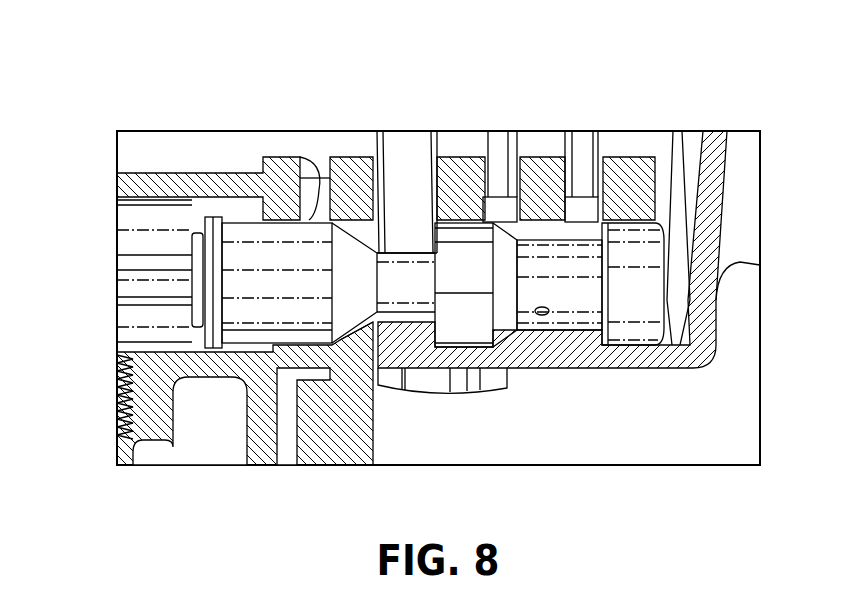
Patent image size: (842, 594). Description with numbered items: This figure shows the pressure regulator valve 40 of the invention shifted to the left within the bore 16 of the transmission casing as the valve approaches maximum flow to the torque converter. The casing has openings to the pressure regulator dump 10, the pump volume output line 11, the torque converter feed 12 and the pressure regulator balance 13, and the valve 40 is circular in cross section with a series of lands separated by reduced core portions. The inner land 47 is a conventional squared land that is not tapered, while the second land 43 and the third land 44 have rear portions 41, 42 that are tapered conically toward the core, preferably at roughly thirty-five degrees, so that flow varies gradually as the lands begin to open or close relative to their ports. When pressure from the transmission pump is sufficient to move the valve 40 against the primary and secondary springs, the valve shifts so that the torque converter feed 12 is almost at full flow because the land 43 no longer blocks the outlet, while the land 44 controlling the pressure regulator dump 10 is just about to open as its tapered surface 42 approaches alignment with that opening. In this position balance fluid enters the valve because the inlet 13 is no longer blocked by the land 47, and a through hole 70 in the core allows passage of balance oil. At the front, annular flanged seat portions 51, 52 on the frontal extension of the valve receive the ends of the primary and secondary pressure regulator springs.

The pressure regulator dump 10 is at (307, 155).
The pump volume output line 11 is at (410, 170).
The torque converter feed 12 is at (500, 170).
The pressure regulator balance 13 is at (623, 168).
The bore 16 is at (248, 230).
The pressure regulator valve 40 is at (313, 254).
The rear portion of second land 41 is at (507, 313).
The rear portion of third land 42 is at (368, 310).
The second land 43 is at (453, 320).
The third land 44 is at (263, 318).
The inner land 47 is at (625, 328).
The annular flanged seat portion 51 is at (228, 240).
The annular flanged seat portion 52 is at (202, 237).
The through hole 70 is at (543, 315).